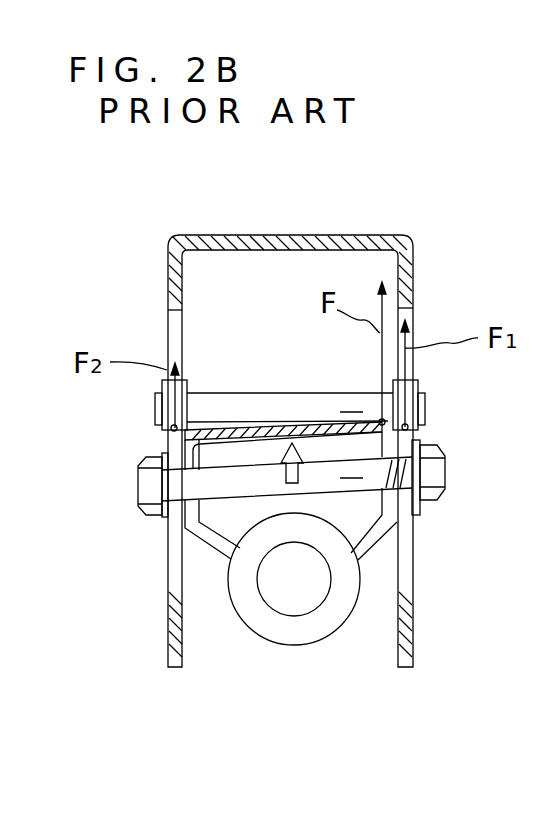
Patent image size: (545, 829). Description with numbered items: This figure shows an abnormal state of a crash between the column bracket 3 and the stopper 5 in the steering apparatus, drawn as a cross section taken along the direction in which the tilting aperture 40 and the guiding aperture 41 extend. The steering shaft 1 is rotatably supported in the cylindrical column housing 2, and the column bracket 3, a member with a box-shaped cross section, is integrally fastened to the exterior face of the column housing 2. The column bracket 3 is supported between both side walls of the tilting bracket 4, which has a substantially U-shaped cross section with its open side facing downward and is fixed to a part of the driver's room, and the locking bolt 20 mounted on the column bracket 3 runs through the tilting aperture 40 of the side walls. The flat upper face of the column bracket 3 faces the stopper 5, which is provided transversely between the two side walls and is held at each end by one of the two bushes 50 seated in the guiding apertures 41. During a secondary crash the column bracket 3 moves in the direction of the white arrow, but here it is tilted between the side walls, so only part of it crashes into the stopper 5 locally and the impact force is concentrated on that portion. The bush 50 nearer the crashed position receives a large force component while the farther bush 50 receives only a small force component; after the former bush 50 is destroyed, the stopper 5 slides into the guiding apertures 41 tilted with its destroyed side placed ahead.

The steering shaft 1 is at (273, 612).
The column housing 2 is at (317, 648).
The column bracket 3 is at (212, 550).
The tilting bracket 4 is at (317, 234).
The stopper 5 is at (233, 395).
The locking bolt 20 is at (337, 493).
The tilting aperture 40 is at (168, 580).
The guiding aperture 41 is at (173, 317).
The bush 50 is at (160, 385).